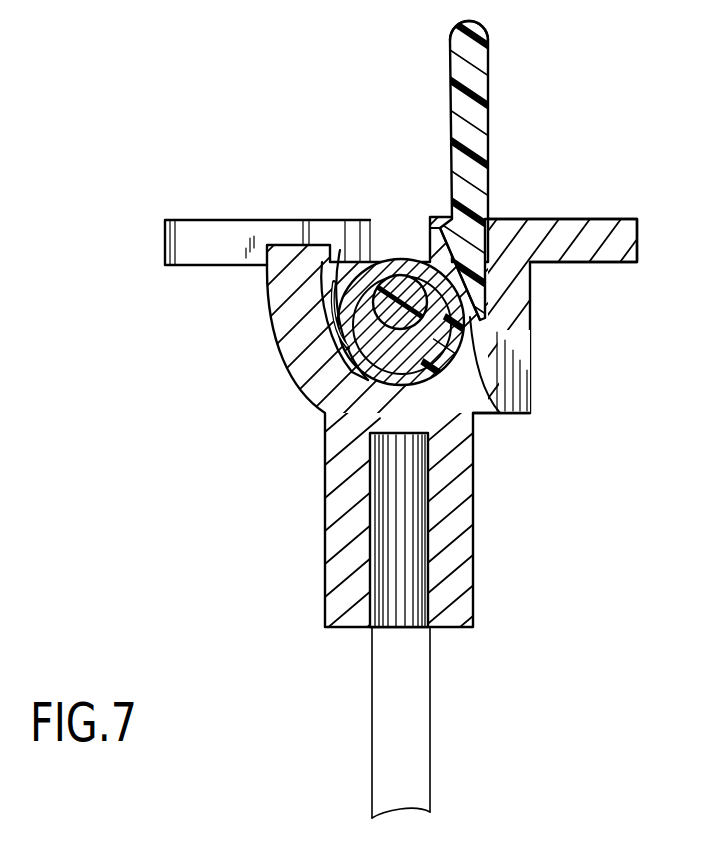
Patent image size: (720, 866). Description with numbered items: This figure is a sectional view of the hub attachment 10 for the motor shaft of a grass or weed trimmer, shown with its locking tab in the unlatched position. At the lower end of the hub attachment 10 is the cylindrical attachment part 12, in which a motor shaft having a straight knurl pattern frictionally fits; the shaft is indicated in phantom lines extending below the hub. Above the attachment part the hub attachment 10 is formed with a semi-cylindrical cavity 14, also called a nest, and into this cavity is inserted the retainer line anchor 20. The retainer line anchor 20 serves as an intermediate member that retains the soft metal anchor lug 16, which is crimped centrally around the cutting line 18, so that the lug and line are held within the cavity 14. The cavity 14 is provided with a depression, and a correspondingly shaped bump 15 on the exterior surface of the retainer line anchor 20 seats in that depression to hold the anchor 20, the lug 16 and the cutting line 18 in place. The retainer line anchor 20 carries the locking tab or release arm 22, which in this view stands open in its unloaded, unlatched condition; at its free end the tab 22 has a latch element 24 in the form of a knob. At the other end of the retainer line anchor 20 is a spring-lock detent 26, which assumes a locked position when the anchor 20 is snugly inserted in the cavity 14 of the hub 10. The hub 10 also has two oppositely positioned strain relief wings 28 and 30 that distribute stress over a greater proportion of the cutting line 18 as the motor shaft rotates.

The hub attachment 10 is at (268, 118).
The cylindrical attachment part 12 is at (484, 628).
The semi-cylindrical cavity 14 is at (470, 415).
The bump 15 is at (342, 320).
The anchor lug 16 is at (421, 255).
The cutting line 18 is at (366, 378).
The retainer line anchor 20 is at (472, 317).
The locking tab 22 is at (489, 160).
The latch element 24 is at (440, 42).
The spring-lock detent 26 is at (316, 297).
The strain relief wing 28 is at (604, 219).
The strain relief wing 30 is at (188, 220).